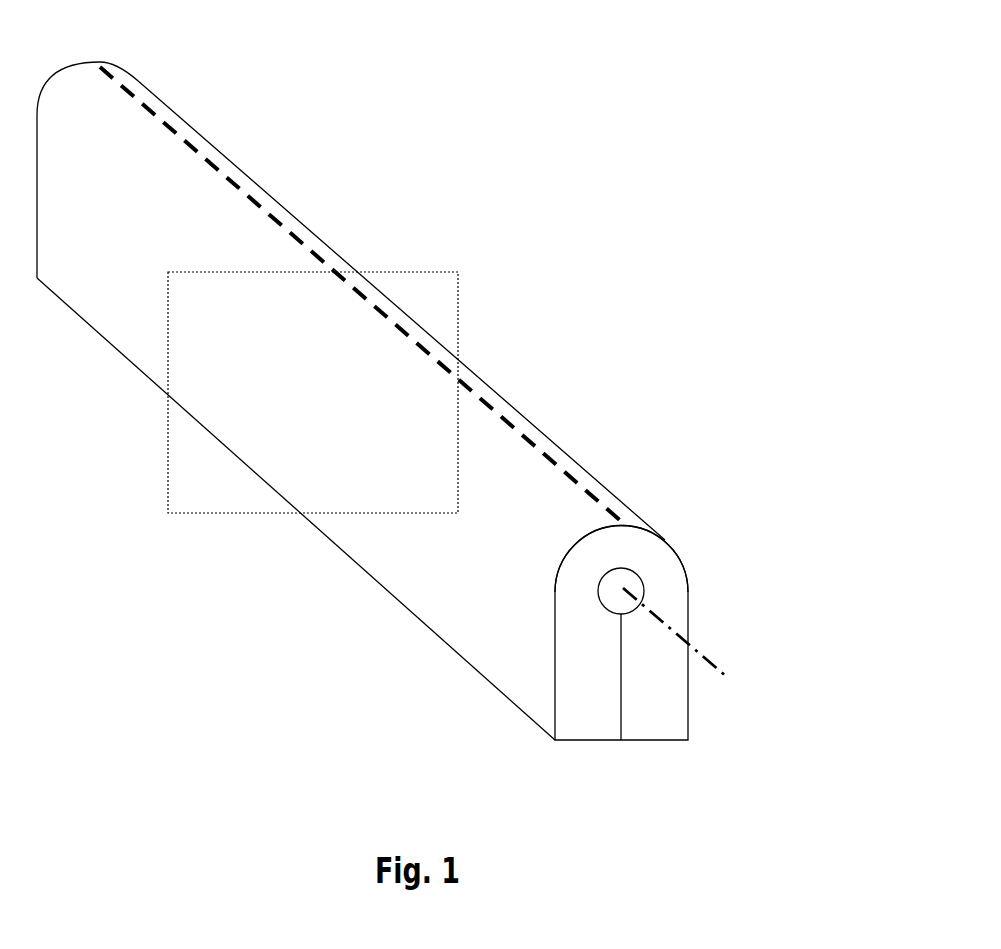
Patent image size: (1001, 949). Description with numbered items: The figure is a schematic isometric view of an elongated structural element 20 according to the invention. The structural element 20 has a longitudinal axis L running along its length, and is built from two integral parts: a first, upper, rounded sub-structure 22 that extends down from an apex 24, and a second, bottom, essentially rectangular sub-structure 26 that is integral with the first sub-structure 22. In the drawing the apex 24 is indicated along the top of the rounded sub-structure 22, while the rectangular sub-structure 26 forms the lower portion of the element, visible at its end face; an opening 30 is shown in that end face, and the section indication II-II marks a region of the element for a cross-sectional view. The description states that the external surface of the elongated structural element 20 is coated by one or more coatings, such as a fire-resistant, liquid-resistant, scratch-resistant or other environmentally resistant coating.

The elongated structural element 20 is at (600, 76).
The first, upper, rounded sub-structure 22 is at (665, 540).
The apex 24 is at (502, 429).
The second, bottom, essentially rectangular sub-structure 26 is at (673, 728).
The hole 30 is at (633, 583).
The longitudinal axis L is at (698, 648).
The section line II-II is at (415, 270).